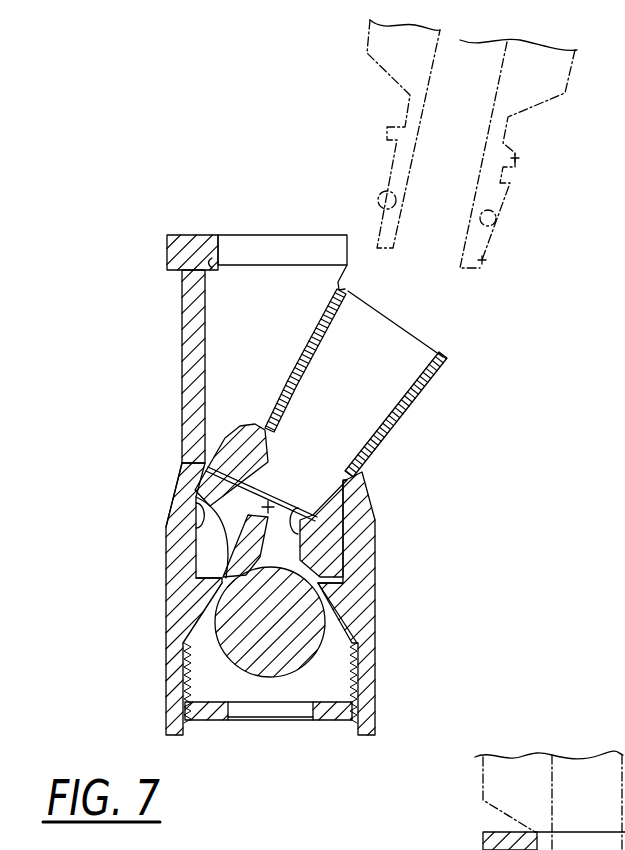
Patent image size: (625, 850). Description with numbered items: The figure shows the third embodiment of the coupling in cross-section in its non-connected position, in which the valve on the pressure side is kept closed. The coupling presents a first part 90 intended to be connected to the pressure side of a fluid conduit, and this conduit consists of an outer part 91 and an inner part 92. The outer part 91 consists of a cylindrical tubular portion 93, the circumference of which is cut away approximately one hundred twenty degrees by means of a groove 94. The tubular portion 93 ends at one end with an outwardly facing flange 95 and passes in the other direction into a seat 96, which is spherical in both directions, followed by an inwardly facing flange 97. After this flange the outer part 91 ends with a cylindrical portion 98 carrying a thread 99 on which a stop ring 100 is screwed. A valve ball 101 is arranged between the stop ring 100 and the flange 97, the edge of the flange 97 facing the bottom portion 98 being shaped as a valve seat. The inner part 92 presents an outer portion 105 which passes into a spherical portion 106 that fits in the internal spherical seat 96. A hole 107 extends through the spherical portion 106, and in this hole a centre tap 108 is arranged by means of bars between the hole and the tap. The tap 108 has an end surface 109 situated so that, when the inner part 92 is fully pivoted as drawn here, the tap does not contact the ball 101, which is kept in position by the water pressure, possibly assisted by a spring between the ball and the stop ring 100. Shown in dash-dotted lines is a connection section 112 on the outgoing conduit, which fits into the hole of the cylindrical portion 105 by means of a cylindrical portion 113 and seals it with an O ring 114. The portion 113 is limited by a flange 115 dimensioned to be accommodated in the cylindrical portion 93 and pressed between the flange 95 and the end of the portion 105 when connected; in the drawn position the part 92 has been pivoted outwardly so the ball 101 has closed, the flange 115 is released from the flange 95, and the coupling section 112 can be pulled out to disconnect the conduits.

The first part 90 is at (180, 297).
The outer part 91 is at (173, 500).
The inner part 92 is at (167, 623).
The cylindrical tubular portion 93 is at (180, 352).
The groove 94 is at (347, 287).
The outwardly facing flange 95 is at (212, 268).
The seat 96 is at (200, 529).
The inwardly facing flange 97 is at (200, 569).
The cylindrical portion 98 is at (185, 711).
The thread 99 is at (188, 722).
The stop ring 100 is at (333, 704).
The valve ball 101 is at (307, 640).
The outer portion 105 is at (432, 378).
The spherical portion 106 is at (345, 517).
The hole 107 is at (300, 497).
The centre tap 108 is at (275, 480).
The end surface 109 is at (238, 588).
The connection section 112 is at (512, 187).
The cylindrical portion 113 is at (486, 260).
The O ring 114 is at (496, 222).
The flange 115 is at (519, 158).